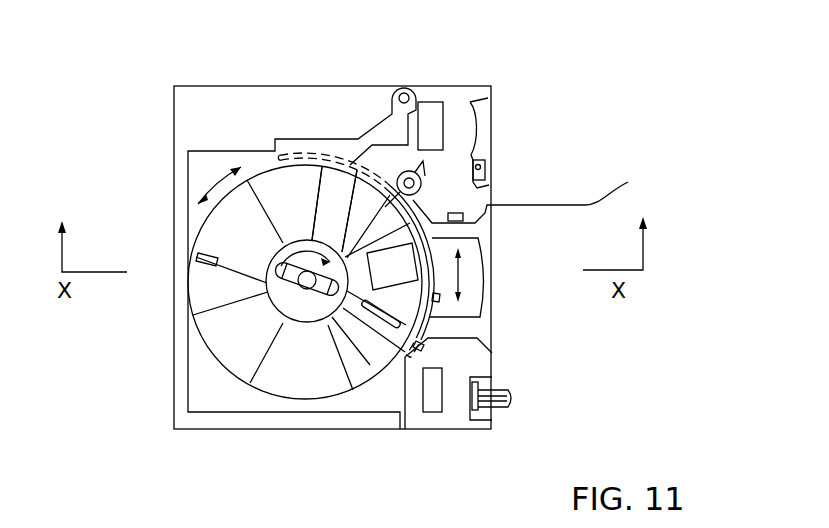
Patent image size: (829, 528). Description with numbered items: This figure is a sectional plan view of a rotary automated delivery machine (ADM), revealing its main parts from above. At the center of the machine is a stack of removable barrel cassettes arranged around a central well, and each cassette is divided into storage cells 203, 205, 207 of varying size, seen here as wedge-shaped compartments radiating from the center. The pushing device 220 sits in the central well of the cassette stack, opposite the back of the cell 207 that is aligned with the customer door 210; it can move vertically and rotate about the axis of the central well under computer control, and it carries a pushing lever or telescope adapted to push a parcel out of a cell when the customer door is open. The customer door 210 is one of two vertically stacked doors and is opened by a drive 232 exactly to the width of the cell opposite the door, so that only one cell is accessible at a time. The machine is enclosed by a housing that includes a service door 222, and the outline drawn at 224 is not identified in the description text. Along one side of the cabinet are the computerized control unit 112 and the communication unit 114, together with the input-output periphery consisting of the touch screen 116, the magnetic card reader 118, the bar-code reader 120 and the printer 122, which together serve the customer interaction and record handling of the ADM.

The computerized control unit 112 is at (432, 122).
The communication unit 114 is at (430, 413).
The touch screen 116 is at (492, 99).
The magnetic card reader 118 is at (481, 171).
The bar-code reader 120 is at (487, 210).
The printer 122 is at (505, 386).
The storage cell 203 is at (258, 247).
The storage cell 205 is at (313, 218).
The storage cell 207 is at (488, 317).
The customer door 210 is at (488, 240).
The pushing device 220 is at (297, 300).
The service door 222 is at (422, 257).
The base plate 224 is at (178, 378).
The drive 232 is at (429, 184).